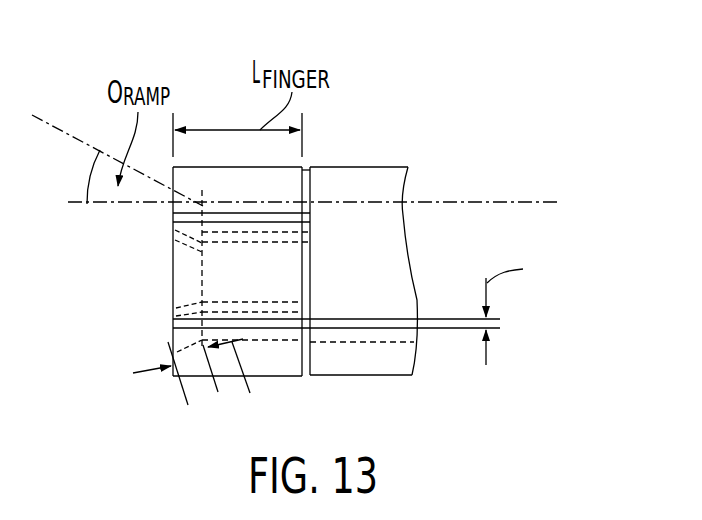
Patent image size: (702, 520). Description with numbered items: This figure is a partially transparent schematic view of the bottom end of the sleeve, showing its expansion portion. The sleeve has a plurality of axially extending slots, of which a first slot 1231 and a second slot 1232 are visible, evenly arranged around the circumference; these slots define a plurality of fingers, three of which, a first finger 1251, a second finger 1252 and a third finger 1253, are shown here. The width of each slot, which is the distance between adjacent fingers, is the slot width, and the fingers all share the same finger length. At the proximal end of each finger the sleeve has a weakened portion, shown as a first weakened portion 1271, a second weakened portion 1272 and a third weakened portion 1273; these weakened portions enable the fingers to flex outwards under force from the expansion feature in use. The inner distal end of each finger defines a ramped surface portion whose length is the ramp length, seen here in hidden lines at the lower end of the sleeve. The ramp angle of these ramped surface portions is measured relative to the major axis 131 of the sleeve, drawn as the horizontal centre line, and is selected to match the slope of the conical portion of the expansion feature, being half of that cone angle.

The axially extending slot 1231 is at (172, 216).
The axially extending slot 1232 is at (172, 325).
The finger 1251 is at (199, 165).
The finger 1252 is at (172, 272).
The finger 1253 is at (170, 377).
The weakened portion 1271 is at (314, 181).
The weakened portion 1272 is at (314, 266).
The weakened portion 1273 is at (314, 353).
The major axis 131 is at (498, 198).